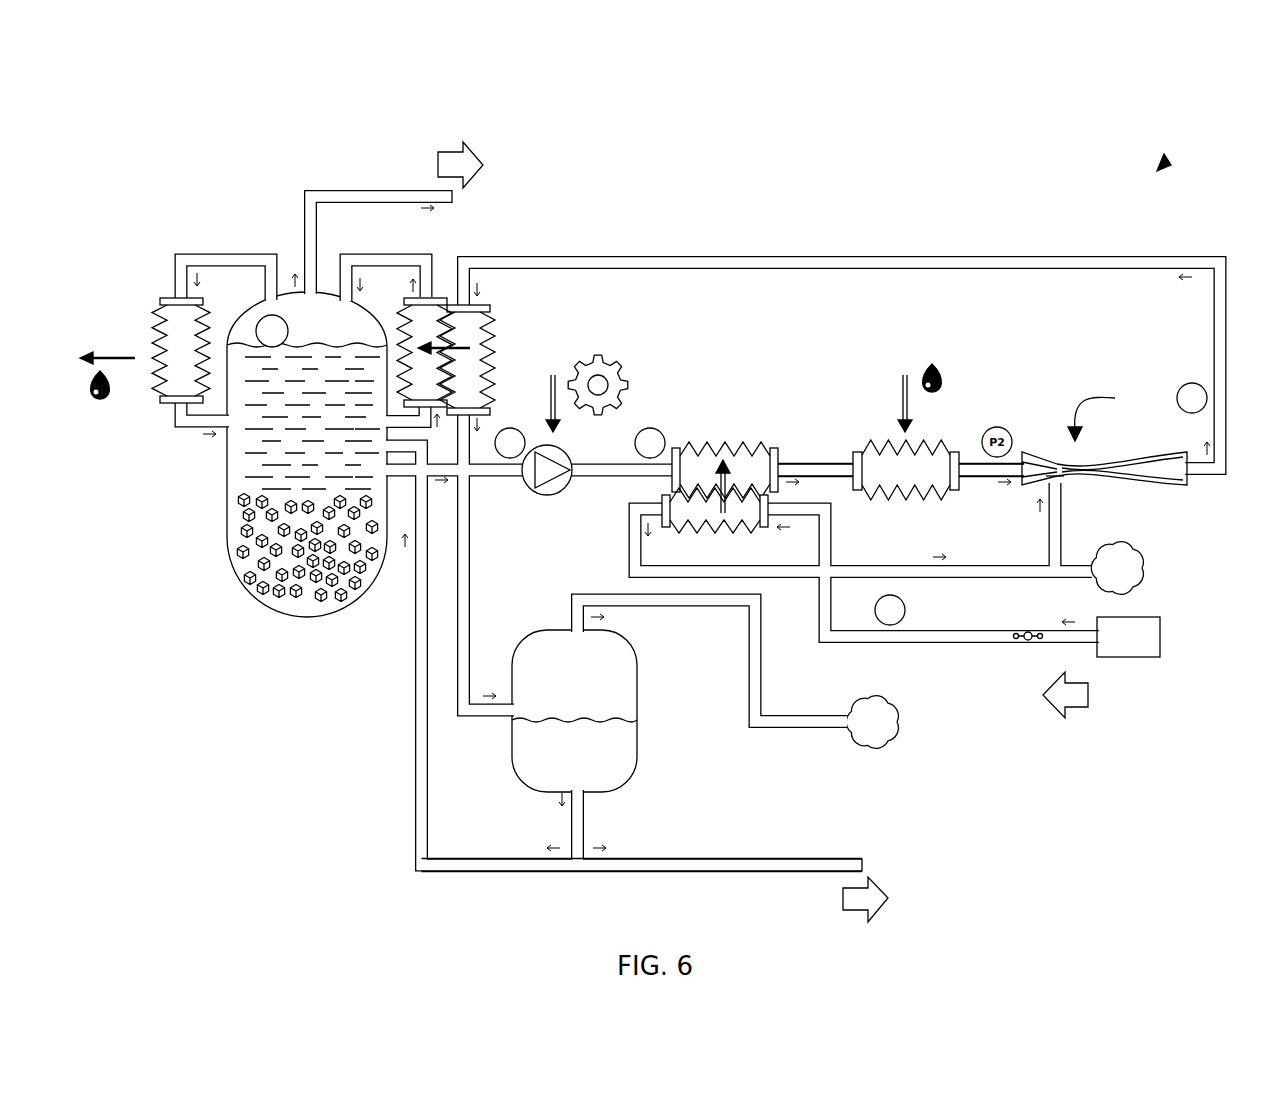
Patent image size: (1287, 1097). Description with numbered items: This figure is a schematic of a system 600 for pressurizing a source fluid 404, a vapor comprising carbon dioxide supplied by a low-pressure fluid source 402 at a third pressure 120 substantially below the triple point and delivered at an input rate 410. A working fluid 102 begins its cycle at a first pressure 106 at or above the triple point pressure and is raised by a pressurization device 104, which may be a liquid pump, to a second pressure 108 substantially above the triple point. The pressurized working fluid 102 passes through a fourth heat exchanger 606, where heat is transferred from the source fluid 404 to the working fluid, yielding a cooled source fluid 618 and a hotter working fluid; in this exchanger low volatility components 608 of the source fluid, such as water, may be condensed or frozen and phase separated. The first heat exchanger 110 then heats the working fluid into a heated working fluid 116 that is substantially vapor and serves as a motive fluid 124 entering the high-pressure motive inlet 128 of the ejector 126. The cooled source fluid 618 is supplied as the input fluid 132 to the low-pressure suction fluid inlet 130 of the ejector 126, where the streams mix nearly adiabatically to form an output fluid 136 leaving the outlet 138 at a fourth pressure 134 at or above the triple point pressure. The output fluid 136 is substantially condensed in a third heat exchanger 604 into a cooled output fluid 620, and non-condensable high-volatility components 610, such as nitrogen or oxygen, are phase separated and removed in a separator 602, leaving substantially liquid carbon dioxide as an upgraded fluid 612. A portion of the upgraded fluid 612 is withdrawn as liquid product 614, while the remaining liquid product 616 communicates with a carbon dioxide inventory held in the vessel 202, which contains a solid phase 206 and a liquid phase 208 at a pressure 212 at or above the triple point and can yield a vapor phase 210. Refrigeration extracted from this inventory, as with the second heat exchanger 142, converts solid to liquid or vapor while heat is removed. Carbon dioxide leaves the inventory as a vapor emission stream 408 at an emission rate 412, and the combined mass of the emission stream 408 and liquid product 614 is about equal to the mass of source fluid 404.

The system 600 is at (1165, 163).
The working fluid 102 is at (487, 480).
The pressurization device 104 is at (560, 486).
The first pressure 106 is at (512, 428).
The second pressure 108 is at (652, 428).
The first heat exchanger 110 is at (888, 450).
The heated working fluid 116 is at (795, 463).
The third pressure 120 is at (905, 607).
The motive fluid 124 is at (970, 463).
The ejector 126 is at (1113, 414).
The high-pressure motive inlet 128 is at (1022, 458).
The low-pressure suction fluid inlet 130 is at (1062, 485).
The input fluid 132 is at (1050, 537).
The fourth pressure 134 is at (1192, 383).
The output fluid 136 is at (842, 262).
The outlet 138 is at (1185, 478).
The second heat exchanger 142 is at (158, 312).
The vessel 202 is at (228, 548).
The solid phase 206 is at (352, 598).
The liquid phase 208 is at (245, 470).
The vapor phase 210 is at (283, 298).
The pressure 212 is at (258, 322).
The low-pressure fluid source 402 is at (1140, 650).
The source fluid 404 is at (933, 640).
The vapor emission stream 408 is at (400, 190).
The input rate 410 is at (1070, 698).
The emission rate 412 is at (470, 152).
The separator 602 is at (640, 705).
The third heat exchanger 604 is at (487, 308).
The fourth heat exchanger 606 is at (745, 442).
The low volatility components 608 is at (1133, 575).
The high-volatility components 610 is at (895, 725).
The upgraded fluid 612 is at (585, 826).
The liquid product 614 is at (825, 866).
The remaining liquid product 616 is at (418, 796).
The cooled source fluid 618 is at (848, 565).
The cooled output fluid 620 is at (465, 602).